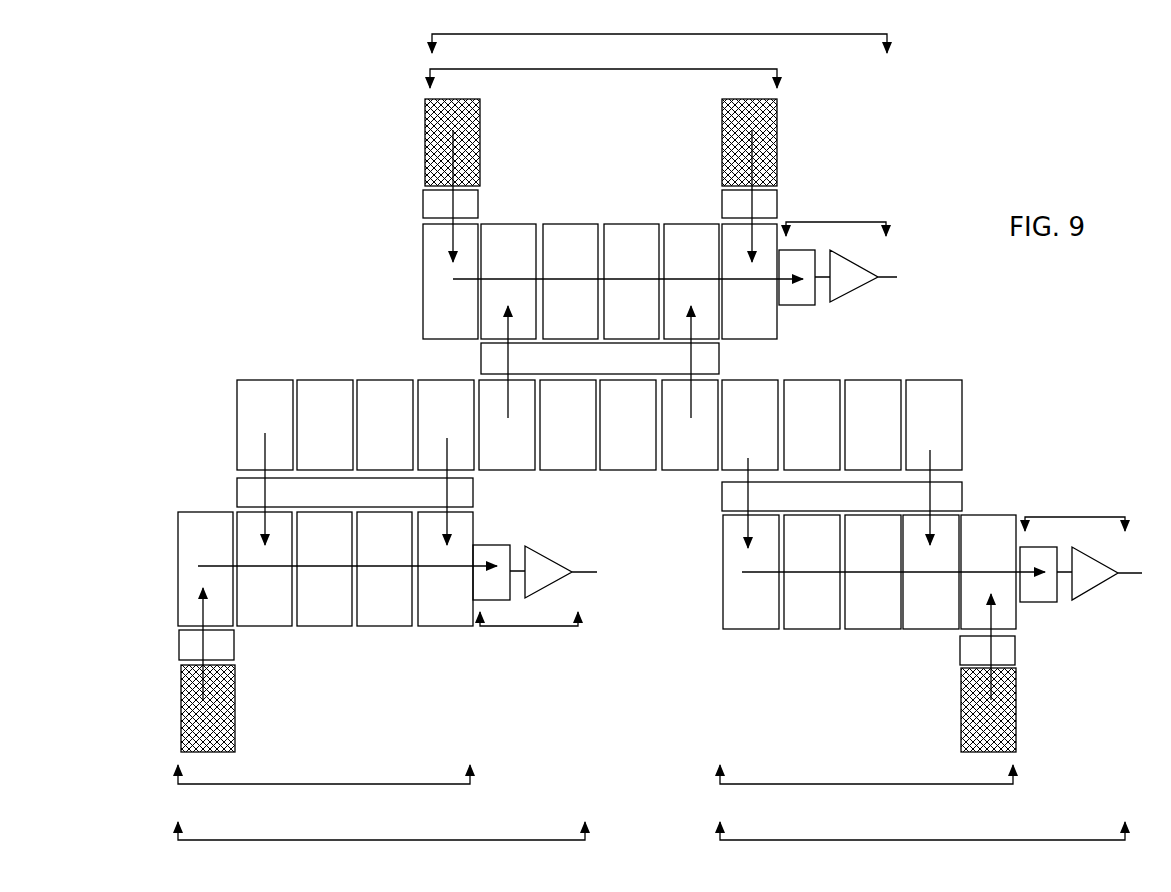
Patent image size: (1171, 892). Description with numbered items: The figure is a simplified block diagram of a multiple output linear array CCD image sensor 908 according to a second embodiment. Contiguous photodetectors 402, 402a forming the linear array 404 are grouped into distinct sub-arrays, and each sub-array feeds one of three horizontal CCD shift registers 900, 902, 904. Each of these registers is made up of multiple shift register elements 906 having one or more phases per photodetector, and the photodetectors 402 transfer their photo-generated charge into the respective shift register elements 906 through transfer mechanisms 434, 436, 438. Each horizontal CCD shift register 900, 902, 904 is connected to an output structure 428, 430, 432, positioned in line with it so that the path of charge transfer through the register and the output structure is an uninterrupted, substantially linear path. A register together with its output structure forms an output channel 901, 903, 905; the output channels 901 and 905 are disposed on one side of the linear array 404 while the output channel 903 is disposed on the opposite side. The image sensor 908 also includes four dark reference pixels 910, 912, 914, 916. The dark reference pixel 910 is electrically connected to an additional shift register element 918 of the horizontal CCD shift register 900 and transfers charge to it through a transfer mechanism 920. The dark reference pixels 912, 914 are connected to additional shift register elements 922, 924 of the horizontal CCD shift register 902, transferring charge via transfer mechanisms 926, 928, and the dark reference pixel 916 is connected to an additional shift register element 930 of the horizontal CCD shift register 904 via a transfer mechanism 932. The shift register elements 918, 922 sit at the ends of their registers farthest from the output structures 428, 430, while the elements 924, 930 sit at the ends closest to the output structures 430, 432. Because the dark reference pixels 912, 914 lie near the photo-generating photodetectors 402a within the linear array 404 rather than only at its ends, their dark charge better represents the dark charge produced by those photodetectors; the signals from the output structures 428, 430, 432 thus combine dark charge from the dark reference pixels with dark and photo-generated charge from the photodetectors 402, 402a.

The photodetectors 402 is at (318, 398).
The photo-generating photodetectors 402a is at (365, 436).
The linear array 404 is at (545, 398).
The output structure 428 is at (529, 633).
The output structure 430 is at (836, 216).
The output structure 432 is at (1075, 511).
The transfer mechanism 434 is at (237, 492).
The transfer mechanism 436 is at (481, 352).
The transfer mechanism 438 is at (722, 490).
The horizontal CCD shift register 900 is at (324, 788).
The output channel 901 is at (381, 846).
The horizontal CCD shift register 902 is at (603, 66).
The output channel 903 is at (659, 31).
The horizontal CCD shift register 904 is at (866, 788).
The output channel 905 is at (922, 842).
The shift register elements 906 is at (570, 228).
The image sensor 908 is at (233, 274).
The dark reference pixel 910 is at (185, 735).
The dark reference pixel 912 is at (425, 144).
The dark reference pixel 914 is at (778, 141).
The dark reference pixel 916 is at (1020, 739).
The additional shift register element 918 is at (188, 560).
The transfer mechanism 920 is at (187, 643).
The additional shift register element 922 is at (430, 293).
The additional shift register element 924 is at (778, 325).
The transfer mechanism 926 is at (423, 205).
The transfer mechanism 928 is at (722, 198).
The additional shift register element 930 is at (993, 518).
The transfer mechanism 932 is at (1010, 658).